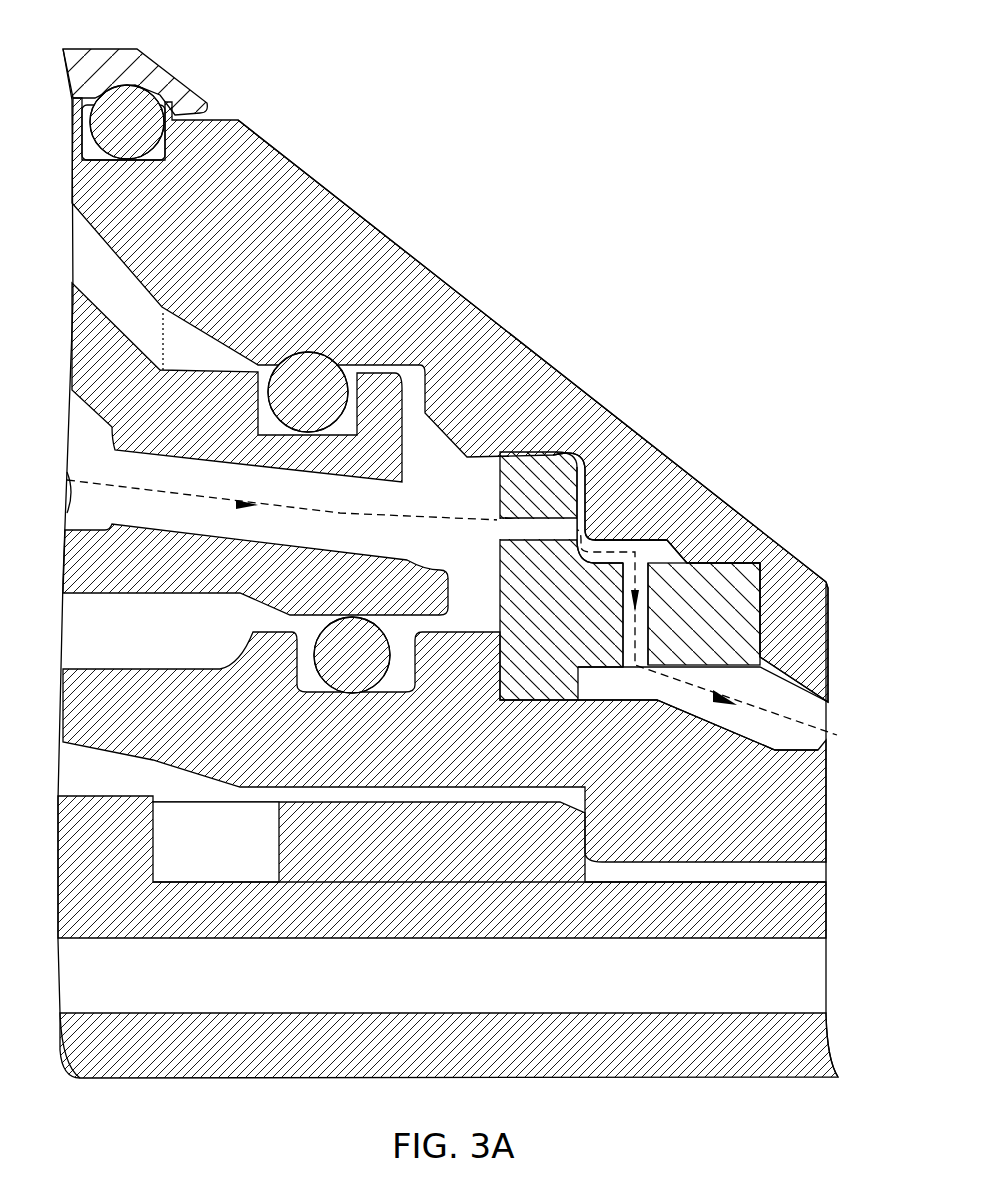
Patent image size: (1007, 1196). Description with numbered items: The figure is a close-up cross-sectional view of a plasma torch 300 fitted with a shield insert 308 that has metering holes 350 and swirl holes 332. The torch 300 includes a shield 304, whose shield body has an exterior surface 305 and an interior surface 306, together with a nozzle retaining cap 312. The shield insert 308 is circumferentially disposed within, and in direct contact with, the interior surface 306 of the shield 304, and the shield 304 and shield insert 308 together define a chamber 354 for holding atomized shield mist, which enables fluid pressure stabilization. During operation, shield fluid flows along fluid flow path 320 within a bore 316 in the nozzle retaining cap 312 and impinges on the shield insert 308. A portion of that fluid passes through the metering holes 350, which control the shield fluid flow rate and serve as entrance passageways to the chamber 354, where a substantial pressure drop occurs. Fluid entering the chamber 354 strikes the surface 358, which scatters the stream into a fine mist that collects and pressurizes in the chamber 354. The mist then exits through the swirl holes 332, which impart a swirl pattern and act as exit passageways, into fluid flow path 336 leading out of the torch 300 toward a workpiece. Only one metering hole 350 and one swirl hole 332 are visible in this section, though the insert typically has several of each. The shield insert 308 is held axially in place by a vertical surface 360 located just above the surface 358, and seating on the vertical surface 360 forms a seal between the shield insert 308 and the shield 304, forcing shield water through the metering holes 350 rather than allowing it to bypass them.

The plasma torch 300 is at (760, 463).
The shield 304 is at (790, 568).
The exterior surface 305 is at (363, 222).
The interior surface 306 is at (468, 445).
The shield insert 308 is at (745, 643).
The nozzle retaining cap 312 is at (375, 385).
The bore 316 is at (177, 467).
The fluid flow path 320 is at (62, 478).
The swirl holes 332 is at (655, 580).
The fluid flow path 336 is at (823, 728).
The metering holes 350 is at (547, 523).
The chamber 354 is at (670, 543).
The surface 358 is at (623, 530).
The vertical surface 360 is at (583, 517).